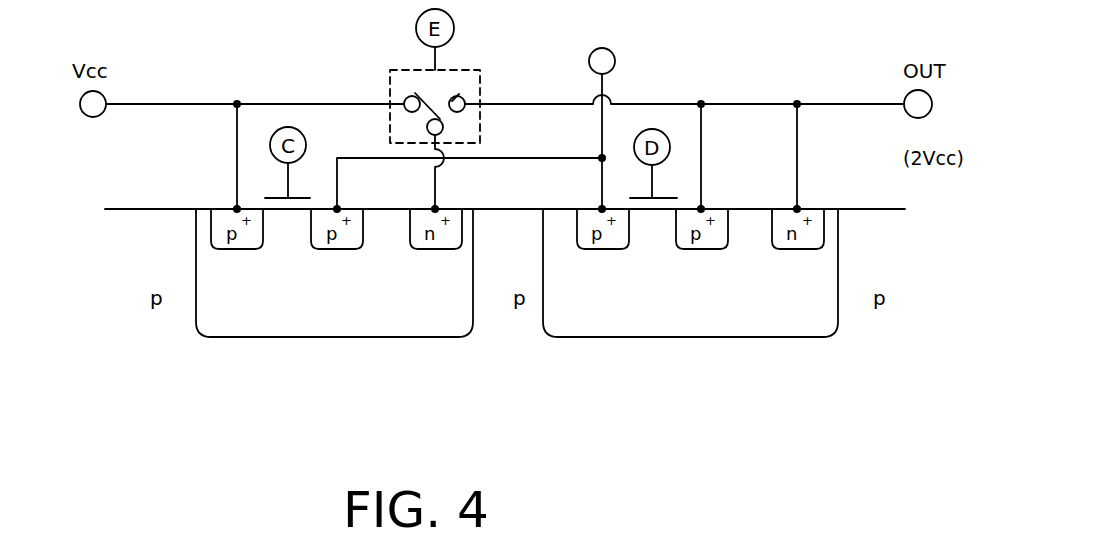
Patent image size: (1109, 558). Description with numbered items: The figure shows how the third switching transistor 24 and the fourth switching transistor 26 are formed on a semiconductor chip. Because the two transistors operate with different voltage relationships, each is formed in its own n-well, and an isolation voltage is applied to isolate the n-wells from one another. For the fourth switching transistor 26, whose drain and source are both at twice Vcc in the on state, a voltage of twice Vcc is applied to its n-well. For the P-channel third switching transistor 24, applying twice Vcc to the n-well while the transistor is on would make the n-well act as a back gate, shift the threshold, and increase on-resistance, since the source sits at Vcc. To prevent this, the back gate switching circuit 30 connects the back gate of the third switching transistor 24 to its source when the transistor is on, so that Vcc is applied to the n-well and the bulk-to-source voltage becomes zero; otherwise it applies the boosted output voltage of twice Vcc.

The third switching transistor 24 is at (283, 276).
The fourth switching transistor 26 is at (666, 276).
The back gate switching circuit 30 is at (390, 80).